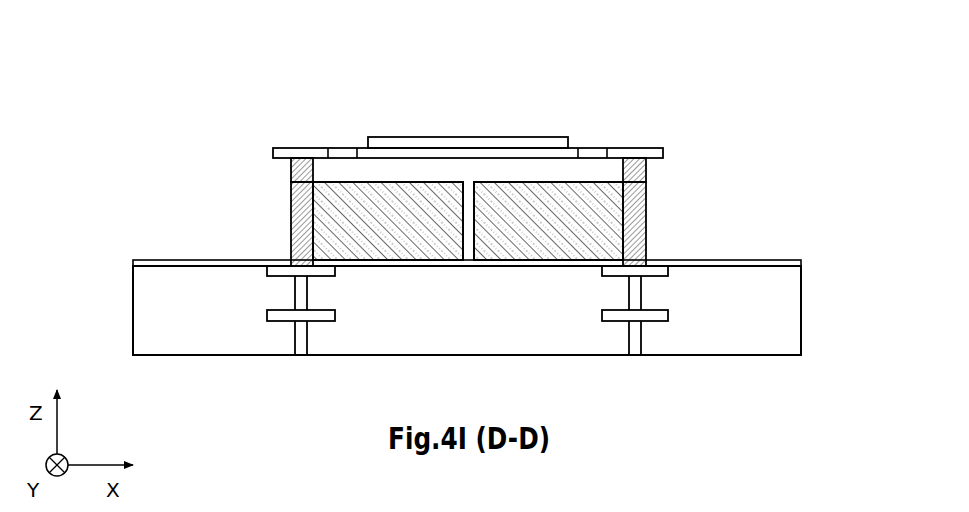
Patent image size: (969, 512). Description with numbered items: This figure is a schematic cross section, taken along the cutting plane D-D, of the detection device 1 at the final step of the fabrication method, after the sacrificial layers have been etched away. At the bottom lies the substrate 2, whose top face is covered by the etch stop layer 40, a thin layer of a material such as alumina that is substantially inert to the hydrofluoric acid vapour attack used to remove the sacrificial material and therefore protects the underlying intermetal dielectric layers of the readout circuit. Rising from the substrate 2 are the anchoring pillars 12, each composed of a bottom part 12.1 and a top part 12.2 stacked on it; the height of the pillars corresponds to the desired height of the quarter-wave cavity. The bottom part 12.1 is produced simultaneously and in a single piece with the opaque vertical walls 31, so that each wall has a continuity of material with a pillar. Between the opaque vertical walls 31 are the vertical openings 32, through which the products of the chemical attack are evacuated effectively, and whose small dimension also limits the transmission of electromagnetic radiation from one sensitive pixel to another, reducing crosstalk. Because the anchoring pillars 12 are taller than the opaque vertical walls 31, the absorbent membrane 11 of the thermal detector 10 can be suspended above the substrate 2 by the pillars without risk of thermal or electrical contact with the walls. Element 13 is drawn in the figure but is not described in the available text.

The detection device 1 is at (140, 81).
The substrate 2 is at (803, 312).
The thermal detector 10 is at (383, 101).
The absorbent membrane 11 is at (570, 132).
The anchoring pillars 12 is at (441, 197).
The bottom part of the anchoring pillars 12.1 is at (289, 226).
The top part of the anchoring pillars 12.2 is at (289, 173).
The carrier plate 13 is at (317, 146).
The opaque vertical walls 31 is at (381, 264).
The vertical openings 32 is at (468, 264).
The etch stop layer 40 is at (803, 263).